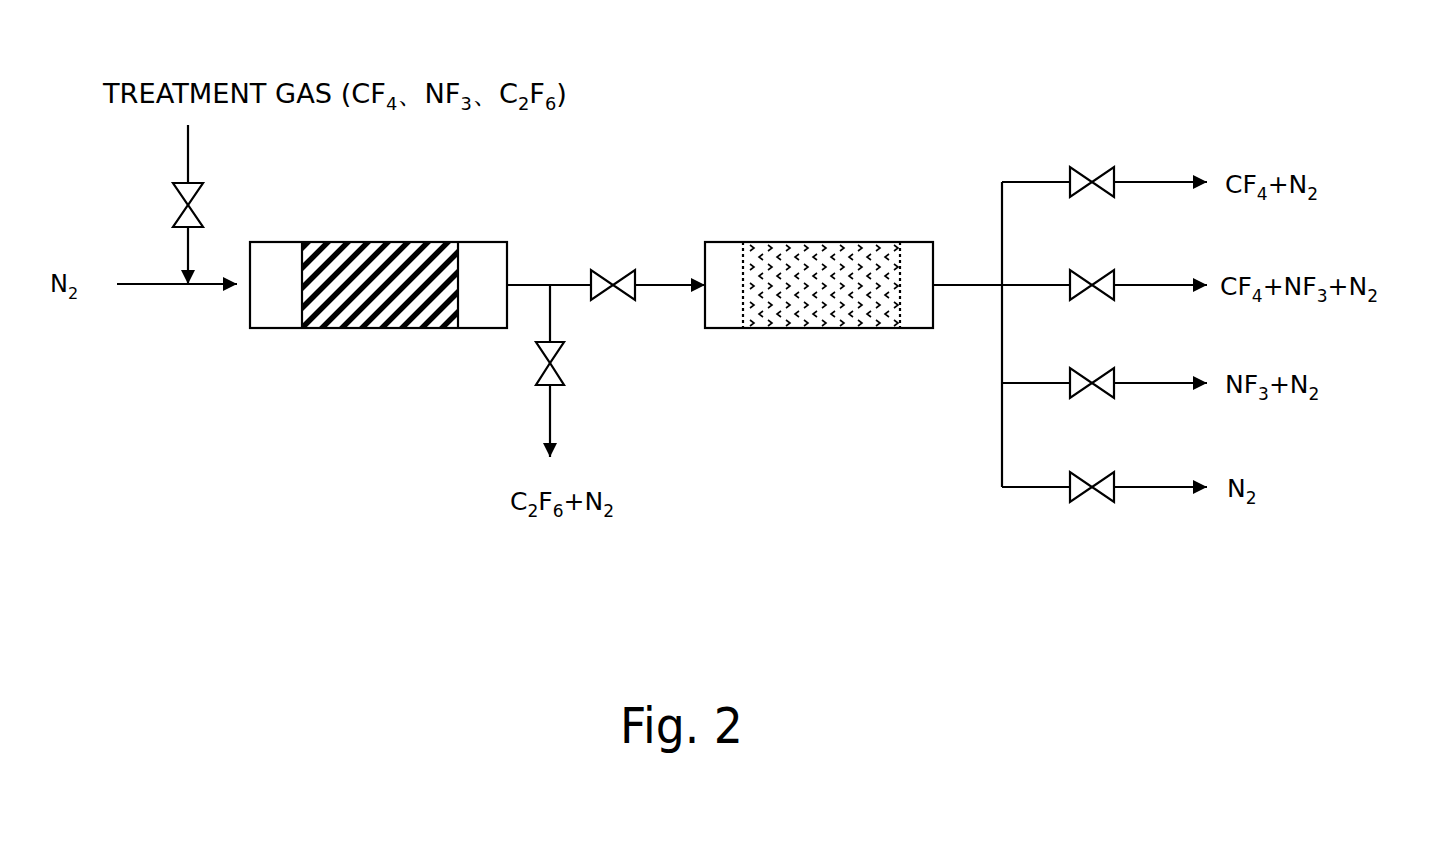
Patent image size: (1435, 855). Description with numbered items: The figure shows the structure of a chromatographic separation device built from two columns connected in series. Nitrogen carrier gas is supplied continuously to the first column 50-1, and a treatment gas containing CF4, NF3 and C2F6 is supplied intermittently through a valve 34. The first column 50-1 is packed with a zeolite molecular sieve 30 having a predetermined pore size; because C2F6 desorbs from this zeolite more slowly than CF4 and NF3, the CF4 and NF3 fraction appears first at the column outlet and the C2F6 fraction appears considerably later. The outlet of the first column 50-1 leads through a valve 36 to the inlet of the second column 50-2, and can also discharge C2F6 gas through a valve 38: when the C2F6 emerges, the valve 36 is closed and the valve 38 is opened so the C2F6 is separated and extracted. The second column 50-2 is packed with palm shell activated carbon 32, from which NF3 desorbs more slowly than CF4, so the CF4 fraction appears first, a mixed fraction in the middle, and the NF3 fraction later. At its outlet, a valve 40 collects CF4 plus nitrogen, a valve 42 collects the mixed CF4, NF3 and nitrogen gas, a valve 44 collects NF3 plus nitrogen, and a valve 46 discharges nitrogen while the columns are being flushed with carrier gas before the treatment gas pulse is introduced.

The zeolite (molecular sieve 13X) 30 is at (372, 279).
The palm shell activated carbon 32 is at (819, 285).
The valve 34 is at (168, 204).
The valve 36 is at (606, 274).
The valve 38 is at (571, 371).
The valve 40 is at (1104, 170).
The valve 42 is at (1104, 272).
The valve 44 is at (1104, 372).
The valve 46 is at (1104, 475).
The first column 50-1 is at (380, 242).
The second column 50-2 is at (820, 242).